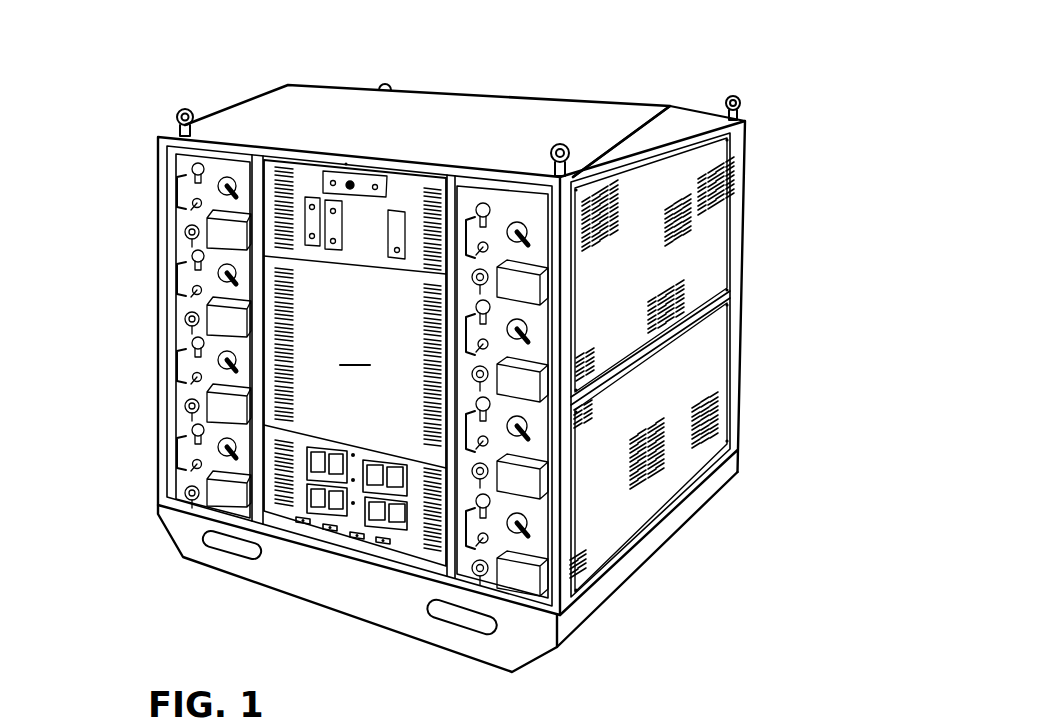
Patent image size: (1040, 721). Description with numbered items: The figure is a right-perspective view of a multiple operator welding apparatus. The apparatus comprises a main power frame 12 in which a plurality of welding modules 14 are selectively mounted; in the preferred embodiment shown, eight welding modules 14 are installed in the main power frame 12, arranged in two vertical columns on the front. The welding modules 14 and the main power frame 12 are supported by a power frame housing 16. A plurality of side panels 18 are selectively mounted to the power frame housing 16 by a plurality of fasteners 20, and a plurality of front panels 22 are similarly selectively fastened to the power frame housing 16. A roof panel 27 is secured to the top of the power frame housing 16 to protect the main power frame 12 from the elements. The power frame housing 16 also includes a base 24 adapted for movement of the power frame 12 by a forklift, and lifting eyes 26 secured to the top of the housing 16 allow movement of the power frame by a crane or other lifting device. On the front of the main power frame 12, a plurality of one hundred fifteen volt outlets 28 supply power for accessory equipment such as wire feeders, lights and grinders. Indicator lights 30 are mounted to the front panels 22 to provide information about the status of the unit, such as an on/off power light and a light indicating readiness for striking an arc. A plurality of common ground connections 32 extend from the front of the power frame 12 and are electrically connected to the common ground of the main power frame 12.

The main power frame 12 is at (114, 316).
The welding module 14 is at (187, 253).
The power frame housing 16 is at (162, 165).
The side panel 18 is at (720, 237).
The fastener 20 is at (740, 135).
The front panel 22 is at (403, 190).
The base 24 is at (333, 583).
The lifting eye 26 is at (178, 112).
The roof panel 27 is at (248, 117).
The 115 V outlet 28 is at (320, 500).
The indicator light 30 is at (341, 177).
The common ground connection 32 is at (367, 542).